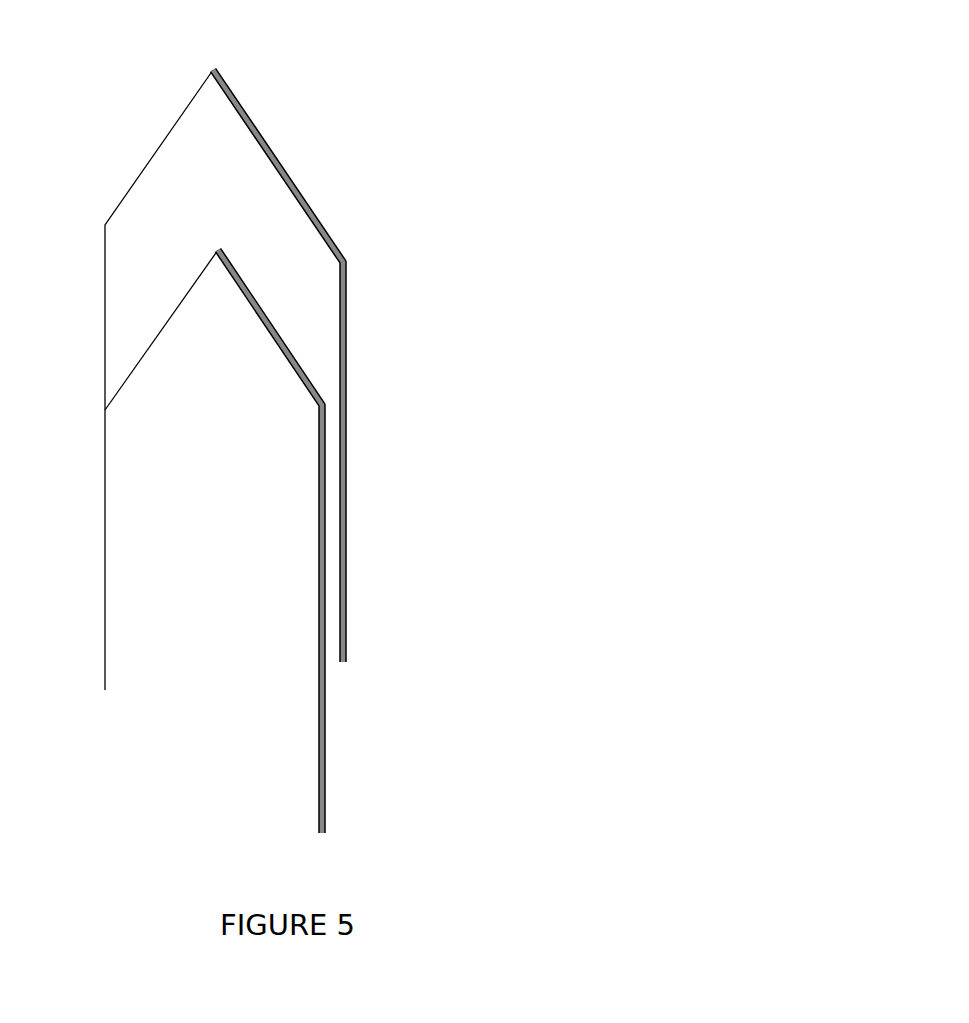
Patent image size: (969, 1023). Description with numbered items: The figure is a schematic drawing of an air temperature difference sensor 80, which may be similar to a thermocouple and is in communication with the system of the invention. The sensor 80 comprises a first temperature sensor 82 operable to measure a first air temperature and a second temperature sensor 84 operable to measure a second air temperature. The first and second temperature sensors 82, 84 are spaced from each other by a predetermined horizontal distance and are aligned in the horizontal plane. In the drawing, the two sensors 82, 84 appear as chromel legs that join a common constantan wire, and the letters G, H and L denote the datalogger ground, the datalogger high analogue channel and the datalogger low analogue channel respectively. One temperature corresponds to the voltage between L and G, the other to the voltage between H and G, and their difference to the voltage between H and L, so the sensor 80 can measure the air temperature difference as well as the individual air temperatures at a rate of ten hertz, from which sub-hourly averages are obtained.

The air temperature difference sensor 80 is at (349, 428).
The first temperature sensor 82 is at (347, 308).
The second temperature sensor 84 is at (326, 690).